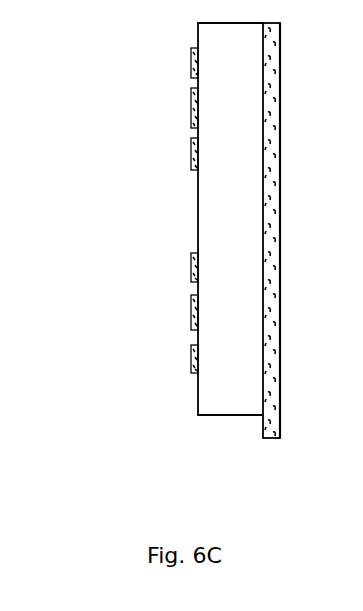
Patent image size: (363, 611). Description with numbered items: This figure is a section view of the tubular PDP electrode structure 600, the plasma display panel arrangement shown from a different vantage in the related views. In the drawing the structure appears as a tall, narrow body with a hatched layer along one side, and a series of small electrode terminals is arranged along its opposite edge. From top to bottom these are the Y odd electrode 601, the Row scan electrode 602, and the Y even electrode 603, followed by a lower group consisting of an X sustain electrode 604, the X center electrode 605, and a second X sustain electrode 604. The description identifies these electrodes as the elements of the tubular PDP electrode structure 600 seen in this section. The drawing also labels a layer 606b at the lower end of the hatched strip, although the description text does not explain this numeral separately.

The tubular PDP electrode structure 600 is at (163, 190).
The Y odd electrode 601 is at (193, 68).
The Row scan electrode 602 is at (193, 113).
The Y even electrode 603 is at (195, 158).
The X sustain electrode 604 is at (192, 273).
The X center electrode 605 is at (192, 317).
The hatched layer strip 606b is at (270, 440).